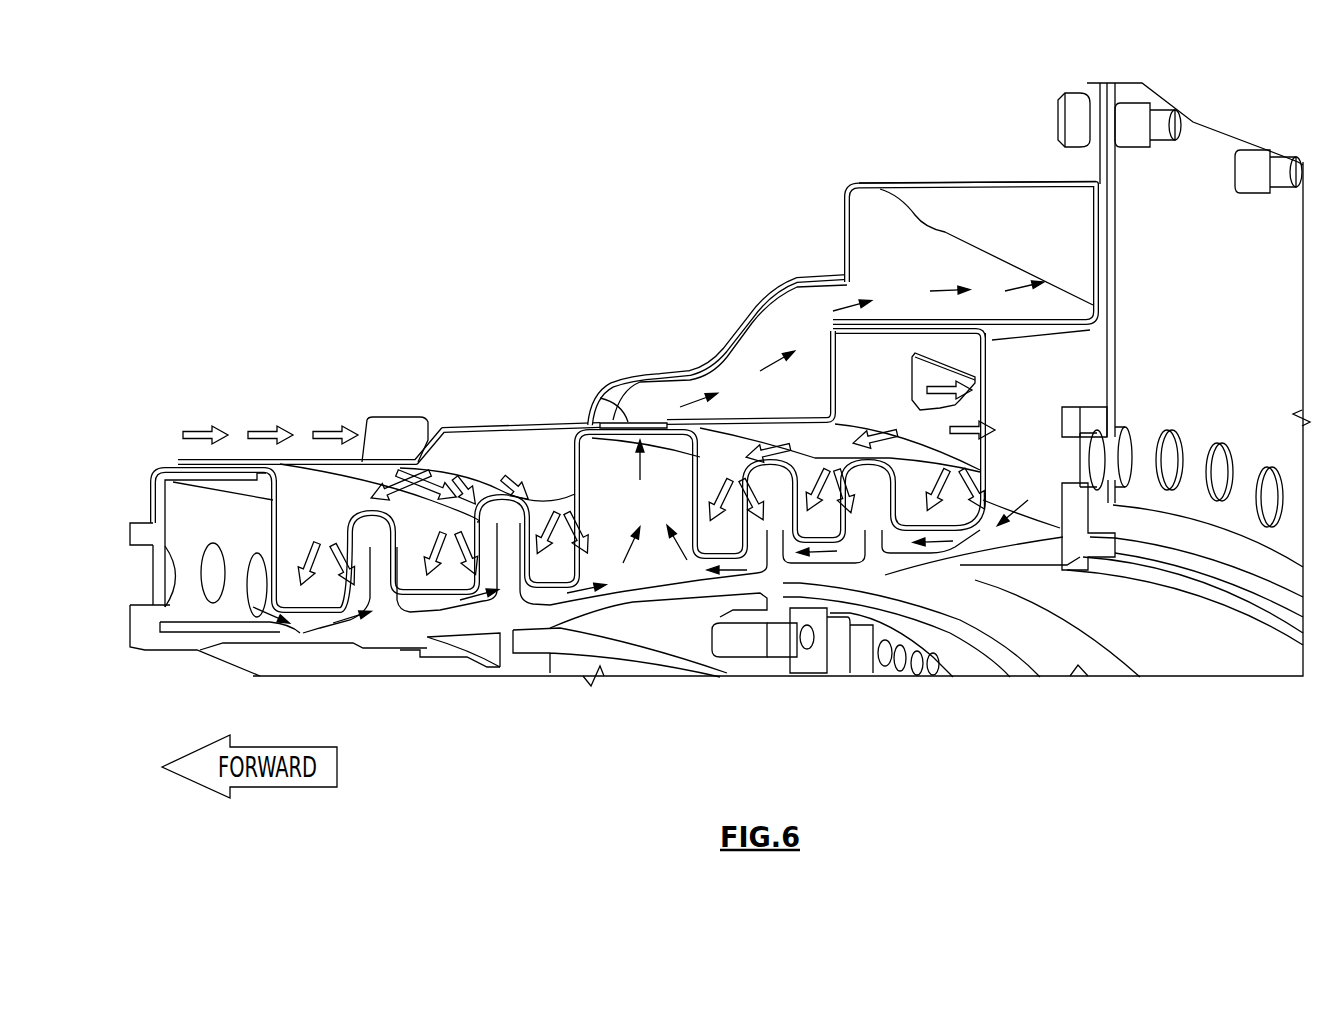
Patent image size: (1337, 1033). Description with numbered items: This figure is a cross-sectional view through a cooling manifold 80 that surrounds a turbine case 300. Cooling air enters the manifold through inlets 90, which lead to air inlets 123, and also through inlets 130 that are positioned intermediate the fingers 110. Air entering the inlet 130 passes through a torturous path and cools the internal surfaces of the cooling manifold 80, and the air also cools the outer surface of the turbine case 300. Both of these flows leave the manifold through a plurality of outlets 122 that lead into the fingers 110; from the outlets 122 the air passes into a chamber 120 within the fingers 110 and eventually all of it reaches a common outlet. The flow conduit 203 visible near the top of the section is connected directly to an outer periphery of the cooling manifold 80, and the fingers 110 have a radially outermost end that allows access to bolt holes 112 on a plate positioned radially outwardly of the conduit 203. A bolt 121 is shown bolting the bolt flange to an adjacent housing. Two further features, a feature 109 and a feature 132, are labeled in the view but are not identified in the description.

The cooling manifold 80 is at (494, 224).
The inlets 90 is at (393, 430).
The top wall of cavity 109 is at (963, 181).
The fingers 110 is at (752, 313).
The bolt holes 112 is at (1093, 92).
The chamber 120 is at (810, 325).
The bolt 121 is at (1060, 103).
The outlets 122 is at (612, 408).
The air inlets 123 is at (452, 476).
The inlets 130 is at (920, 377).
The liner wall 132 is at (975, 530).
The flow conduit 203 is at (910, 263).
The turbine case 300 is at (882, 558).